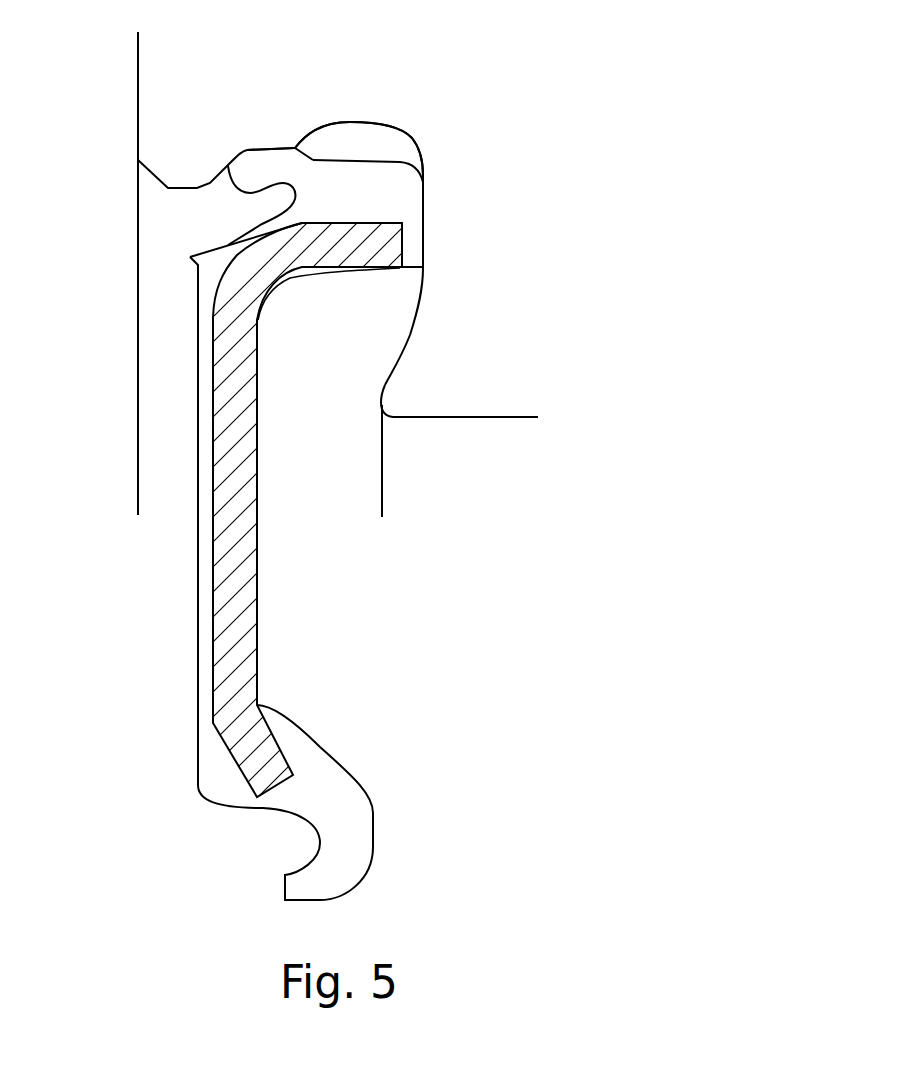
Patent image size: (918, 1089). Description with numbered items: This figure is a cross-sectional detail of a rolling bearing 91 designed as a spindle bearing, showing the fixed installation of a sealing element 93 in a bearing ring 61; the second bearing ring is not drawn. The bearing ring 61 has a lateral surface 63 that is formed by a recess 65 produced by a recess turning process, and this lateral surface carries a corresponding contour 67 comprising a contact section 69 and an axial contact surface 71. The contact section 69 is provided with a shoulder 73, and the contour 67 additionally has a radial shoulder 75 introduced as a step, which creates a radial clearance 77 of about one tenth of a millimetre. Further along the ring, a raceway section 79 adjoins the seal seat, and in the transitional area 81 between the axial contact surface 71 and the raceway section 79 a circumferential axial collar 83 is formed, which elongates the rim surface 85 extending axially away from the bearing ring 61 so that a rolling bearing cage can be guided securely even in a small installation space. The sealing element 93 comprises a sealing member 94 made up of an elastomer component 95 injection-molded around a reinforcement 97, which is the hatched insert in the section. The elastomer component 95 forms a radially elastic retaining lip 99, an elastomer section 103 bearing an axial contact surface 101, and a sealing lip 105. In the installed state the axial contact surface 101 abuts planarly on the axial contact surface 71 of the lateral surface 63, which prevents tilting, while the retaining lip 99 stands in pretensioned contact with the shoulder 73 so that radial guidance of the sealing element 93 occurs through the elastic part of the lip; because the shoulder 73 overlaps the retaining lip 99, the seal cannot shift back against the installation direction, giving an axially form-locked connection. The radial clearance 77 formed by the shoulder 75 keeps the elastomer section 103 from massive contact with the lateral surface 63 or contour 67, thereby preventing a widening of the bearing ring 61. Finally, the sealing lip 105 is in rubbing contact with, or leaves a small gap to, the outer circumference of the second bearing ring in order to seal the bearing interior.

The bearing ring 61 is at (442, 408).
The lateral surface 63 is at (262, 142).
The recess 65 is at (333, 123).
The contour 67 is at (262, 142).
The contact section 69 is at (213, 189).
The axial contact surface 71 is at (425, 249).
The shoulder 73 is at (197, 187).
The radial shoulder 75 is at (311, 151).
The radial clearance 77 is at (378, 149).
The raceway section 79 is at (501, 343).
The transitional area 81 is at (366, 367).
The axial collar 83 is at (380, 397).
The rim surface 85 is at (458, 418).
The bearing 91 is at (513, 77).
The sealing element 93 is at (161, 380).
The sealing member 94 is at (210, 585).
The elastomer component 95 is at (194, 262).
The reinforcement 97 is at (230, 442).
The radially elastic retaining lip 99 is at (240, 165).
The axial contact surface 101 is at (425, 210).
The elastomer section 103 is at (422, 188).
The sealing lip 105 is at (337, 870).